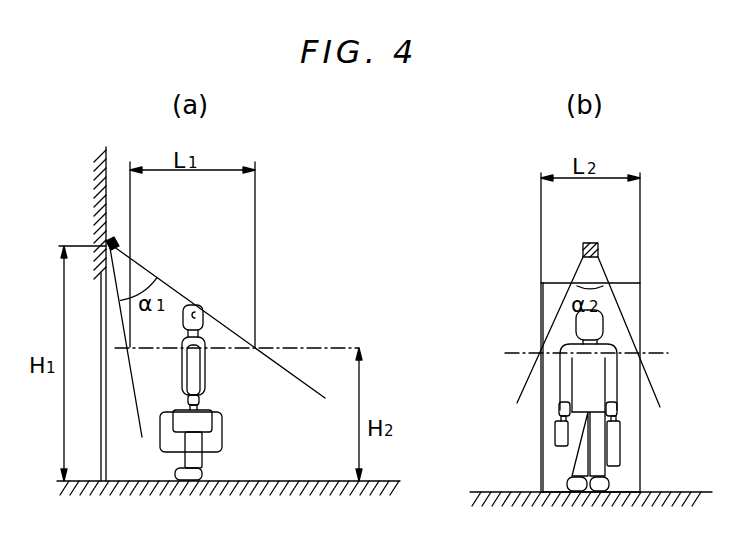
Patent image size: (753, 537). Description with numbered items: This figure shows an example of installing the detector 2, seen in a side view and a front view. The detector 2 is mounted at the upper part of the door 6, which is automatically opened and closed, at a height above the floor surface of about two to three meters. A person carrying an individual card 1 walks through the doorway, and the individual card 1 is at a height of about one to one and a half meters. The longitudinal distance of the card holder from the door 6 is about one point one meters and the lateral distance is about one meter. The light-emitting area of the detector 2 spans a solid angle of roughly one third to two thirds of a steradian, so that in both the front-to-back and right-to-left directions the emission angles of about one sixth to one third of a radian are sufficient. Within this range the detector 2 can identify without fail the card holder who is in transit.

The individual card 1 is at (178, 349).
The detector 2 is at (583, 246).
The door 6 is at (103, 457).